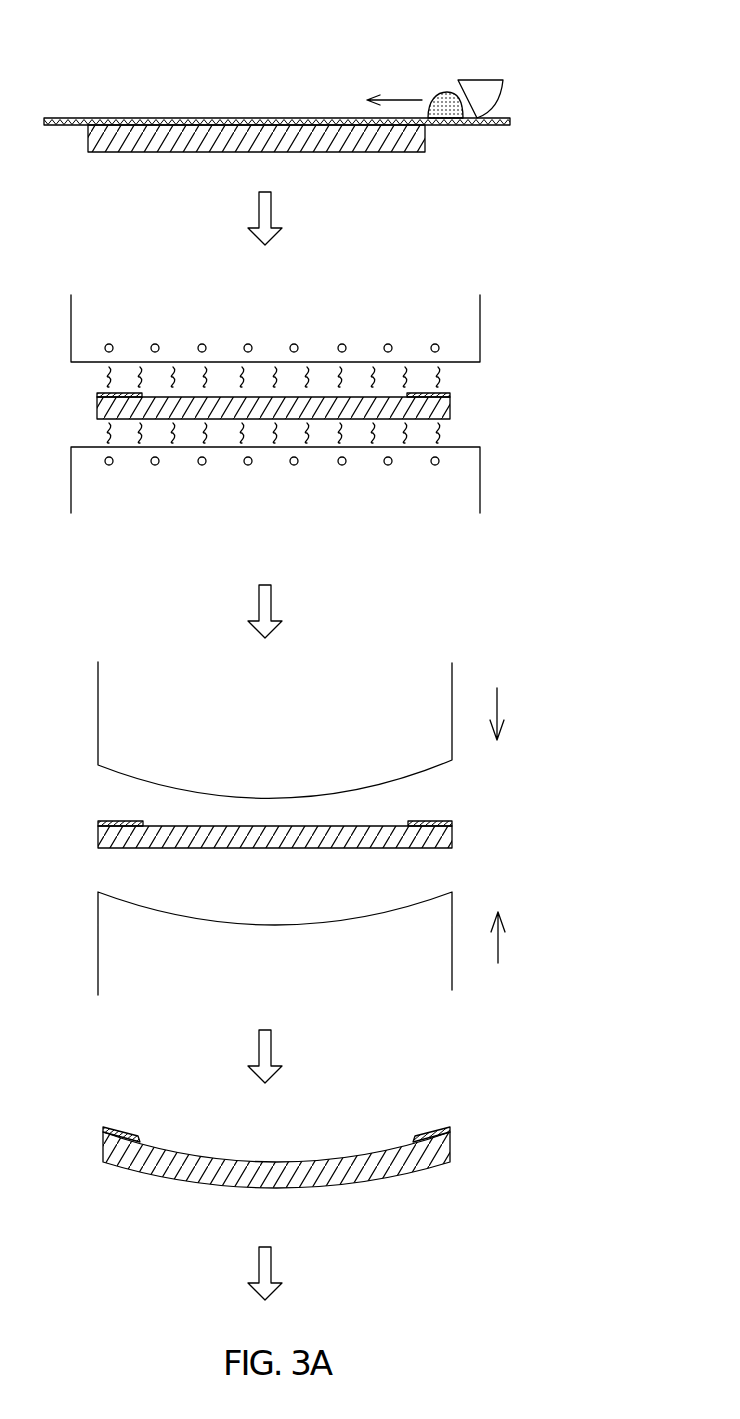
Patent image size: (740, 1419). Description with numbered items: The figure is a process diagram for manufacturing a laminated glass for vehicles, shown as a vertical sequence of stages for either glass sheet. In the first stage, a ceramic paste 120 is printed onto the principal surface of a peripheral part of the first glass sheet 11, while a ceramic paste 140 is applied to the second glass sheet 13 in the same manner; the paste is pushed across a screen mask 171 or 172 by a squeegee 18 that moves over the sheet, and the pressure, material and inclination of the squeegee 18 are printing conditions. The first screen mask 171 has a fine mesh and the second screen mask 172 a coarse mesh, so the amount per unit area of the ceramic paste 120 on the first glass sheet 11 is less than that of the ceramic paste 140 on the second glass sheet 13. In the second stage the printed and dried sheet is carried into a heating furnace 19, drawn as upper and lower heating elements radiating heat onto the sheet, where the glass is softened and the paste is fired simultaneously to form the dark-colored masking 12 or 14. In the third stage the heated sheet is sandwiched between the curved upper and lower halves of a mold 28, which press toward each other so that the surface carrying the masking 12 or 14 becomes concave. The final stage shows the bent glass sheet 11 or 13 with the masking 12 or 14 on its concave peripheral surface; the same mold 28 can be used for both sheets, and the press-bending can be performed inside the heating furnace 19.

The first glass sheet 11 is at (354, 656).
The second glass sheet 13 is at (407, 152).
The dark-colored masking 12 is at (359, 978).
The dark-colored masking 14 is at (452, 823).
The squeegee 18 is at (492, 92).
The heating furnace 19 is at (470, 320).
The mold 28 is at (110, 713).
The ceramic paste 120 is at (373, 214).
The ceramic paste 140 is at (482, 95).
The first screen mask 171 is at (357, 124).
The second screen mask 172 is at (510, 122).